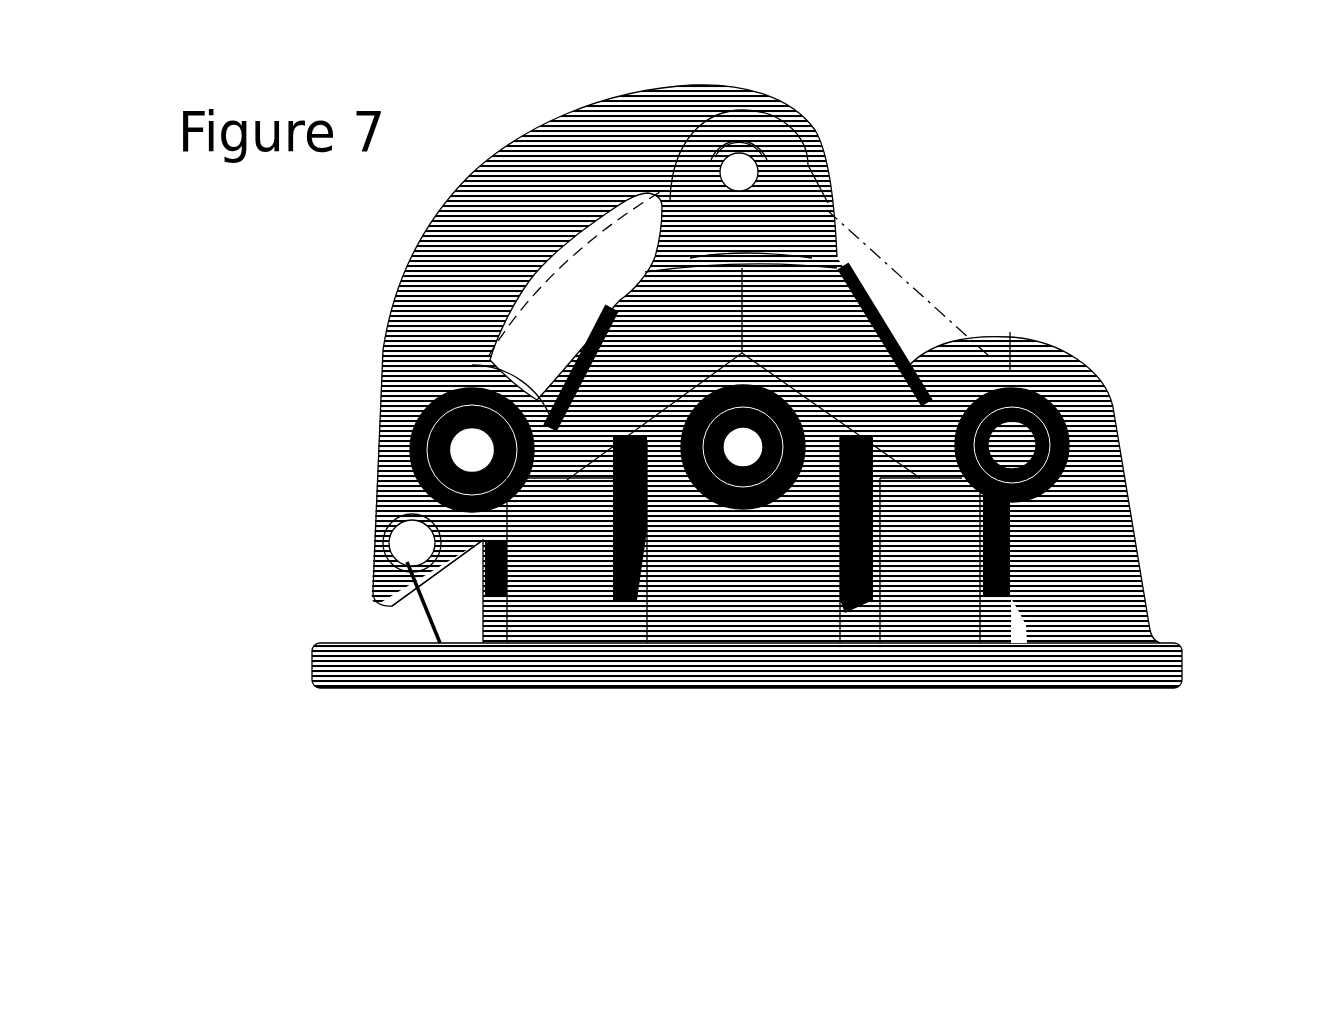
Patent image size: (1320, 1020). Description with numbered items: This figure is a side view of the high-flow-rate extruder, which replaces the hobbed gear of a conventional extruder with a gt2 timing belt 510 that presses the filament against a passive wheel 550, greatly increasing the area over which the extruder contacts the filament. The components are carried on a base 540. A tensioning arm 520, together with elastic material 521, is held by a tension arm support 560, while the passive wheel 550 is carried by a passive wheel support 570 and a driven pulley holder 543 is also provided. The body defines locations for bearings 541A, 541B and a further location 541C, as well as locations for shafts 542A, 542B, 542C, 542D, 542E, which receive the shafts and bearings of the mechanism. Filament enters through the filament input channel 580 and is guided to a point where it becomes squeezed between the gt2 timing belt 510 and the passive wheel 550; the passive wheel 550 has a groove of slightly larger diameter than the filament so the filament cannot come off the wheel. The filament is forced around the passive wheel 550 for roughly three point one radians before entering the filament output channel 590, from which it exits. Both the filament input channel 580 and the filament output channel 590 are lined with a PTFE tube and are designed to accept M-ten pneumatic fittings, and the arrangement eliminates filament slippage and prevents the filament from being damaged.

The gt2 timing belt 510 is at (917, 277).
The tensioning arm 520 is at (375, 386).
The elastic material 521 is at (413, 611).
The base 540 is at (304, 666).
The location for bearings 541A is at (443, 460).
The location for bearings 541B is at (1080, 458).
The third boss 541C is at (773, 497).
The location for a shaft 542A is at (388, 555).
The location for a shaft 542B is at (403, 469).
The location for a shaft 542C is at (770, 177).
The location for a shaft 542D is at (1069, 416).
The location for a shaft 542E is at (743, 505).
The driven pulley holder 543 is at (1143, 527).
The passive wheel 550 is at (912, 343).
The tension arm support 560 is at (621, 322).
The passive wheel support 570 is at (622, 600).
The filament input channel 580 is at (540, 647).
The filament output channel 590 is at (969, 645).